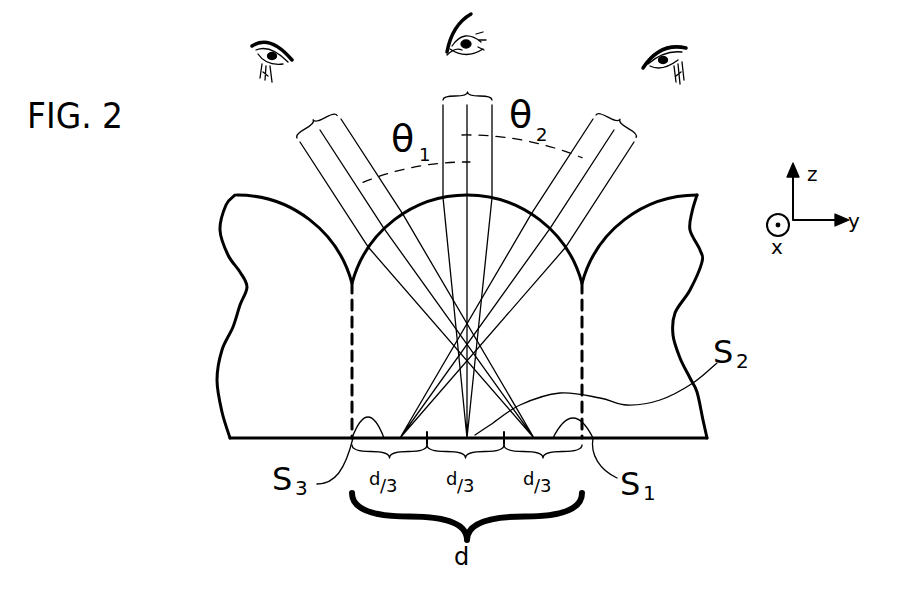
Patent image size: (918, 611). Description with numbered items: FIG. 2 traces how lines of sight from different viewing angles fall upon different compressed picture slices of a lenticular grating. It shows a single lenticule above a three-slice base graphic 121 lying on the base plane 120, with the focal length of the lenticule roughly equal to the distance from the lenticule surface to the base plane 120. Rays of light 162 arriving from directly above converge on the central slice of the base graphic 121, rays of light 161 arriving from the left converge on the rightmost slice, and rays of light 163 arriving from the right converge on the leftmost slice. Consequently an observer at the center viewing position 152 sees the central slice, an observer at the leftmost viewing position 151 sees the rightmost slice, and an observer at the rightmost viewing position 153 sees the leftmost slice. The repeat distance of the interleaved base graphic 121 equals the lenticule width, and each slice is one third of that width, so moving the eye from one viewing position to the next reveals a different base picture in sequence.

The base plane 120 is at (710, 437).
The base graphic 121 is at (230, 437).
The leftmost viewing position 151 is at (285, 54).
The center viewing position 152 is at (483, 33).
The rightmost viewing position 153 is at (685, 58).
The rays of light incident from the left 161 is at (407, 267).
The rays of light incident from directly above 162 is at (467, 253).
The rays of light incident from the right 163 is at (525, 265).